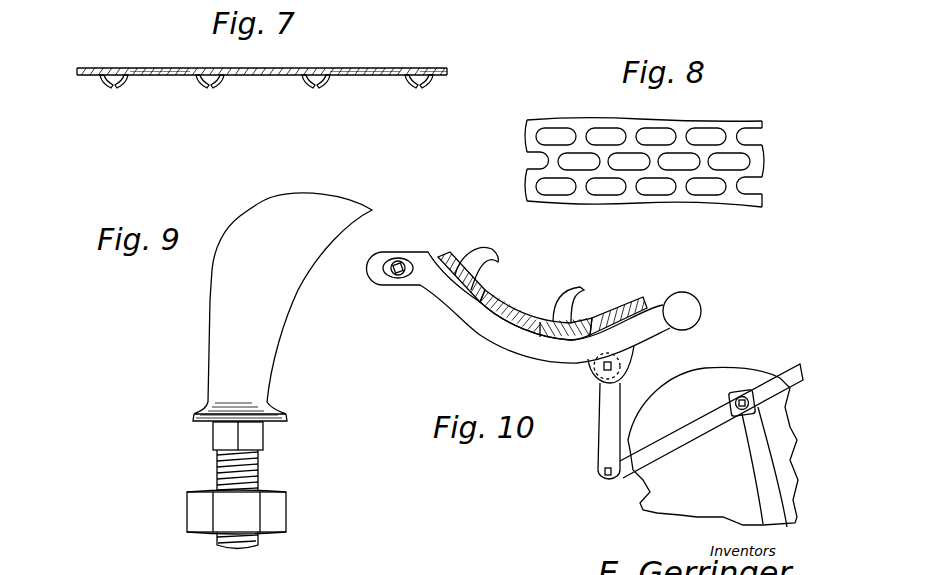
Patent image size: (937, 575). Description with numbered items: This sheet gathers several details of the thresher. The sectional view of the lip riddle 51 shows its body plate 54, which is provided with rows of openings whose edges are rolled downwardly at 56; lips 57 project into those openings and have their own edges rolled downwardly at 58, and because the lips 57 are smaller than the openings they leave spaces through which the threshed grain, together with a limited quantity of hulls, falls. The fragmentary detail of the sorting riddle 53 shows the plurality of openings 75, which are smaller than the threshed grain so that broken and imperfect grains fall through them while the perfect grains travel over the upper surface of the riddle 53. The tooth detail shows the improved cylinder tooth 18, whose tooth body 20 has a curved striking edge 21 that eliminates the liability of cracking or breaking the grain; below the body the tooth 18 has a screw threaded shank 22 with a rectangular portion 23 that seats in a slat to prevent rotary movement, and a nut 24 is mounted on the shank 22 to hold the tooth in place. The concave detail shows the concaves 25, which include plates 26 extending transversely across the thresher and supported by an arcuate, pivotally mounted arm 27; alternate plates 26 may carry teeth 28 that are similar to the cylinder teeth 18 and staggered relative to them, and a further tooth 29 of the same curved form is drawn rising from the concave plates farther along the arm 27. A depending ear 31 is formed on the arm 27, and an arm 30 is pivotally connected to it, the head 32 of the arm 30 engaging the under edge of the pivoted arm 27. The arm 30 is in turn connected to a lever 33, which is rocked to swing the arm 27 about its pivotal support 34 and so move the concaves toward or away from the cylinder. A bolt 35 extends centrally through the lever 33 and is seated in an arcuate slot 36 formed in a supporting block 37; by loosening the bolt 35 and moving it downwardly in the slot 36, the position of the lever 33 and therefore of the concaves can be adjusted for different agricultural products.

In FIG. 7, the riddle 51 is at (444, 66).
In FIG. 7, the body plate 54 is at (305, 57).
In FIG. 7, the rolled edges of openings 56 is at (215, 87).
In FIG. 7, the lips 57 is at (188, 68).
In FIG. 7, the rolled edges of lips 58 is at (125, 86).
In FIG. 8, the riddle 53 is at (748, 112).
In FIG. 8, the openings 75 is at (657, 195).
In FIG. 9, the cylinder tooth 18 is at (270, 357).
In FIG. 9, the tooth body 20 is at (247, 367).
In FIG. 9, the striking edge 21 is at (296, 194).
In FIG. 10, the striking edge 21 is at (616, 309).
In FIG. 9, the screw threaded shank 22 is at (258, 468).
In FIG. 9, the rectangular portion of the shank 23 is at (257, 440).
In FIG. 9, the nut 24 is at (270, 516).
In FIG. 10, the concaves 25 is at (489, 293).
In FIG. 10, the concave plates 26 is at (512, 316).
In FIG. 10, the arcuate arms 27 is at (485, 335).
In FIG. 10, the teeth 28 is at (494, 237).
In FIG. 10, the hook 29 is at (590, 274).
In FIG. 10, the arms 30 is at (598, 428).
In FIG. 10, the depending ears 31 is at (625, 351).
In FIG. 10, the heads 32 is at (596, 373).
In FIG. 10, the levers 33 is at (700, 425).
In FIG. 10, the pivotal support 34 is at (398, 277).
In FIG. 10, the bolt 35 is at (752, 392).
In FIG. 10, the arcuate slot 36 is at (762, 472).
In FIG. 10, the supporting block 37 is at (661, 497).